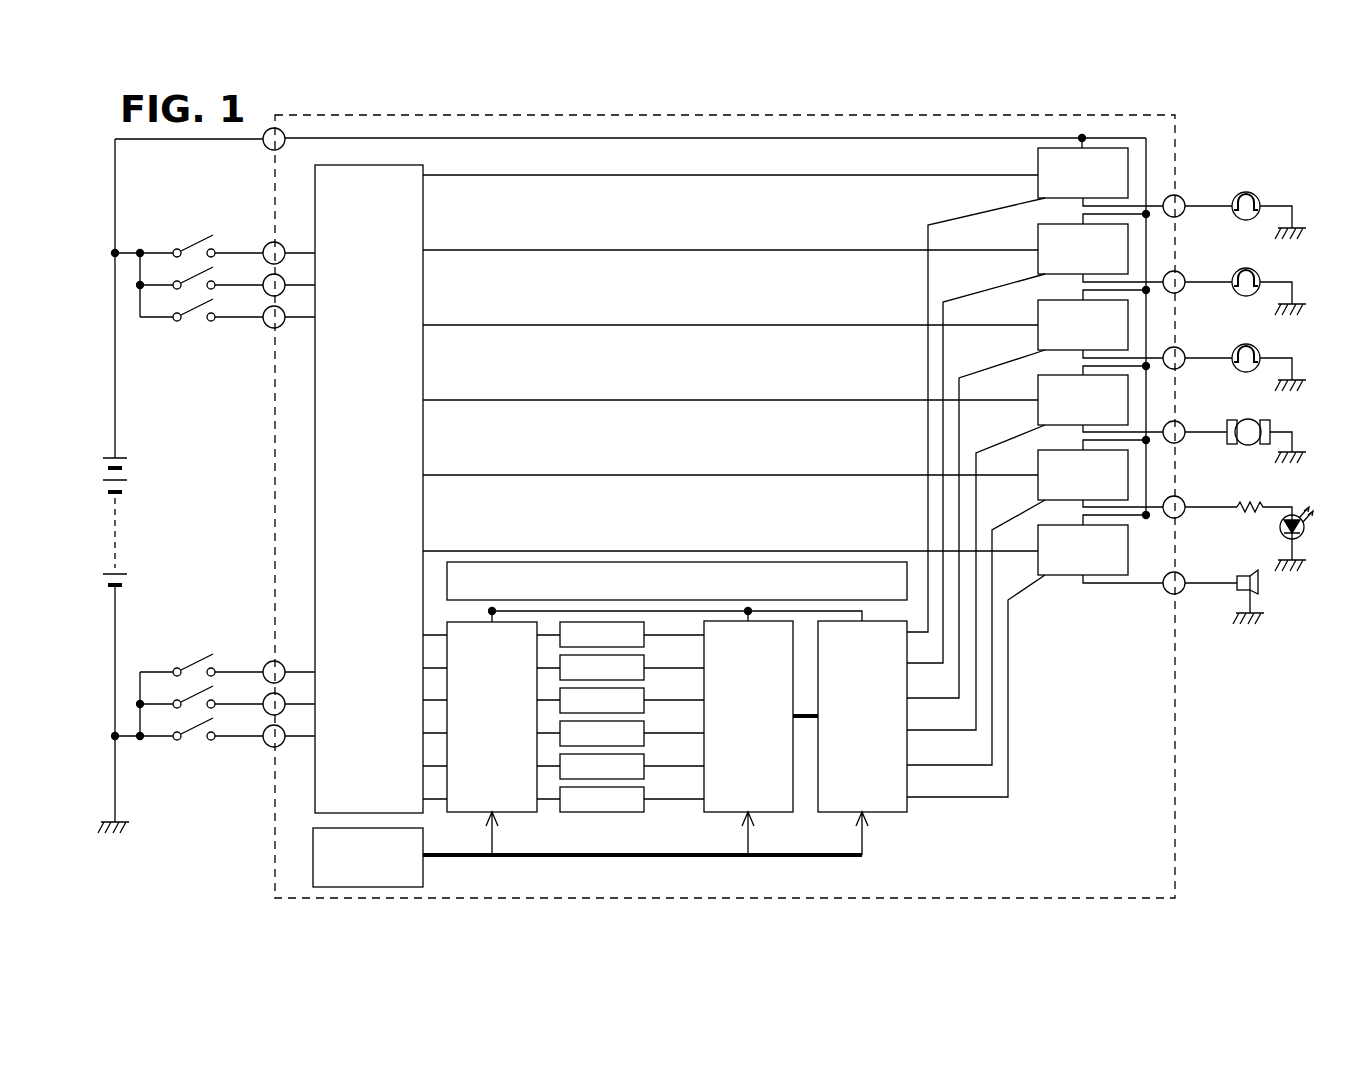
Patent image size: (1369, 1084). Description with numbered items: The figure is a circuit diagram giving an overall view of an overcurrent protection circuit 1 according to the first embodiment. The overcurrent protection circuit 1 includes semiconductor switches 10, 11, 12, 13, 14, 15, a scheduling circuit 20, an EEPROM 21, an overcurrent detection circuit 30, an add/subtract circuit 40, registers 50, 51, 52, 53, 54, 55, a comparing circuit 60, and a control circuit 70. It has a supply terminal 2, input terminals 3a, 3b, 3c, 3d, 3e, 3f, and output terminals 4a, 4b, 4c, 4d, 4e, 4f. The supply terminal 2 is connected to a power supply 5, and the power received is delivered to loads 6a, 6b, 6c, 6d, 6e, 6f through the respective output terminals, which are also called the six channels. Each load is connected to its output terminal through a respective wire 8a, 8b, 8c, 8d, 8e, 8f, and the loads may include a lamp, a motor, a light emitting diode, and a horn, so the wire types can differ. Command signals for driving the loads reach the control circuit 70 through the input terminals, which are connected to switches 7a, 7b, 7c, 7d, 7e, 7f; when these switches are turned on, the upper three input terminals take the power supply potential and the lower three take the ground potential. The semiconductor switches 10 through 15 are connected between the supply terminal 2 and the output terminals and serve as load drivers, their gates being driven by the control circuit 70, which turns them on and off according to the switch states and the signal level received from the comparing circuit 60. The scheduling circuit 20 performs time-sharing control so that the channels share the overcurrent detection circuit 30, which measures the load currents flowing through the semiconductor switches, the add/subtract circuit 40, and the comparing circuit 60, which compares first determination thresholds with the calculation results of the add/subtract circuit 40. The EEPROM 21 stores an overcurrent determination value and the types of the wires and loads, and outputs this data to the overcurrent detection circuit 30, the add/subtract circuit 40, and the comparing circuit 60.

The overcurrent protection circuit 1 is at (712, 115).
The supply terminal 2 is at (265, 147).
The input terminal 3a is at (268, 243).
The input terminal 3b is at (264, 275).
The input terminal 3c is at (268, 327).
The input terminal 3d is at (270, 661).
The input terminal 3e is at (266, 696).
The input terminal 3f is at (270, 745).
The output terminal 4a is at (1181, 215).
The output terminal 4b is at (1181, 291).
The output terminal 4c is at (1181, 367).
The output terminal 4d is at (1181, 441).
The output terminal 4e is at (1181, 516).
The output terminal 4f is at (1181, 592).
The power supply 5 is at (113, 457).
The load 6a is at (1258, 196).
The load 6b is at (1258, 272).
The load 6c is at (1258, 348).
The load 6d is at (1270, 420).
The load 6e is at (1311, 515).
The load 6f is at (1258, 583).
The switch 7a is at (197, 242).
The switch 7b is at (192, 275).
The switch 7c is at (197, 324).
The switch 7d is at (197, 660).
The switch 7e is at (193, 695).
The switch 7f is at (197, 743).
The wire 8a is at (1228, 202).
The wire 8b is at (1220, 284).
The wire 8c is at (1220, 360).
The wire 8d is at (1220, 434).
The wire 8e is at (1222, 509).
The wire 8f is at (1222, 586).
The semiconductor switch 10 is at (1038, 163).
The semiconductor switch 11 is at (1038, 239).
The semiconductor switch 12 is at (1038, 314).
The semiconductor switch 13 is at (1038, 391).
The semiconductor switch 14 is at (1038, 466).
The semiconductor switch 15 is at (1068, 576).
The scheduling circuit 20 is at (889, 562).
The EEPROM 21 is at (423, 876).
The overcurrent detection circuit 30 is at (880, 812).
The add/subtract circuit 40 is at (770, 812).
The register 50 is at (644, 645).
The register 51 is at (644, 678).
The register 52 is at (644, 711).
The register 53 is at (644, 744).
The register 54 is at (644, 777).
The register 55 is at (644, 810).
The comparing circuit 60 is at (520, 812).
The control circuit 70 is at (315, 466).